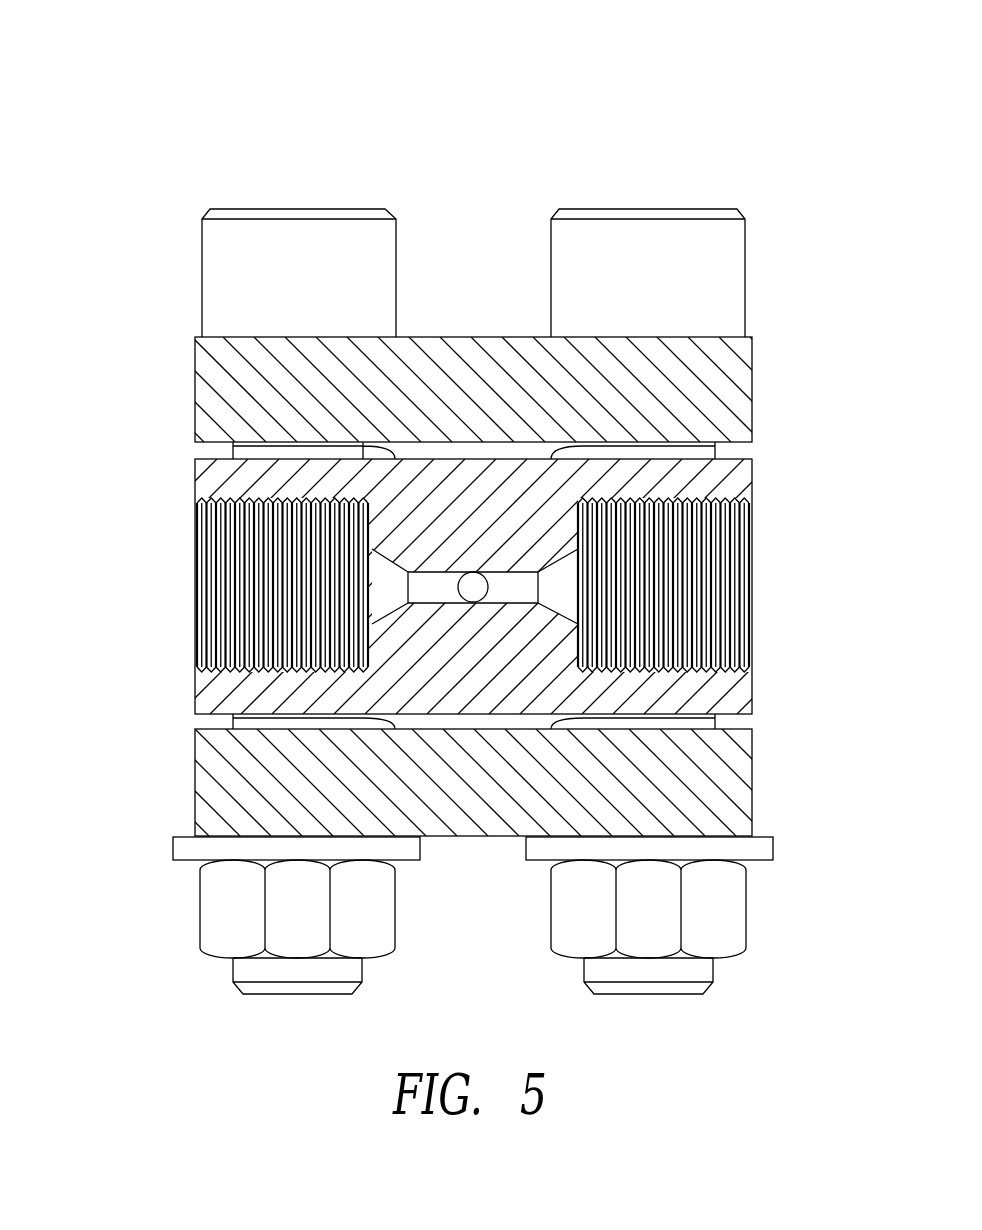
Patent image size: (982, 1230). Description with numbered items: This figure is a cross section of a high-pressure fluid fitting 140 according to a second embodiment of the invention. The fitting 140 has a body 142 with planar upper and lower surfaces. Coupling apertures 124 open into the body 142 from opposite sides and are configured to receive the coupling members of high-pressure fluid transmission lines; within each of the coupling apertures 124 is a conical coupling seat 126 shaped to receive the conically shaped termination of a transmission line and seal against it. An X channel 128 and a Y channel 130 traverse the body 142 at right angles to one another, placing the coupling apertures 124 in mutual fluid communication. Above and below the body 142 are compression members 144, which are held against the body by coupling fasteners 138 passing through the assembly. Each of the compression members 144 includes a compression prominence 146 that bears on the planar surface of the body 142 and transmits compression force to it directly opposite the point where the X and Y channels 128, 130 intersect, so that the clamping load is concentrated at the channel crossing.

The fitting 140 is at (128, 107).
The coupling fasteners 138 is at (300, 240).
The compression members 144 is at (740, 388).
The body 142 is at (732, 483).
The coupling apertures 124 is at (673, 670).
The conical coupling seats 126 is at (566, 604).
The X channel 128 is at (427, 582).
The Y channel 130 is at (473, 585).
The compression prominences 146 is at (535, 453).